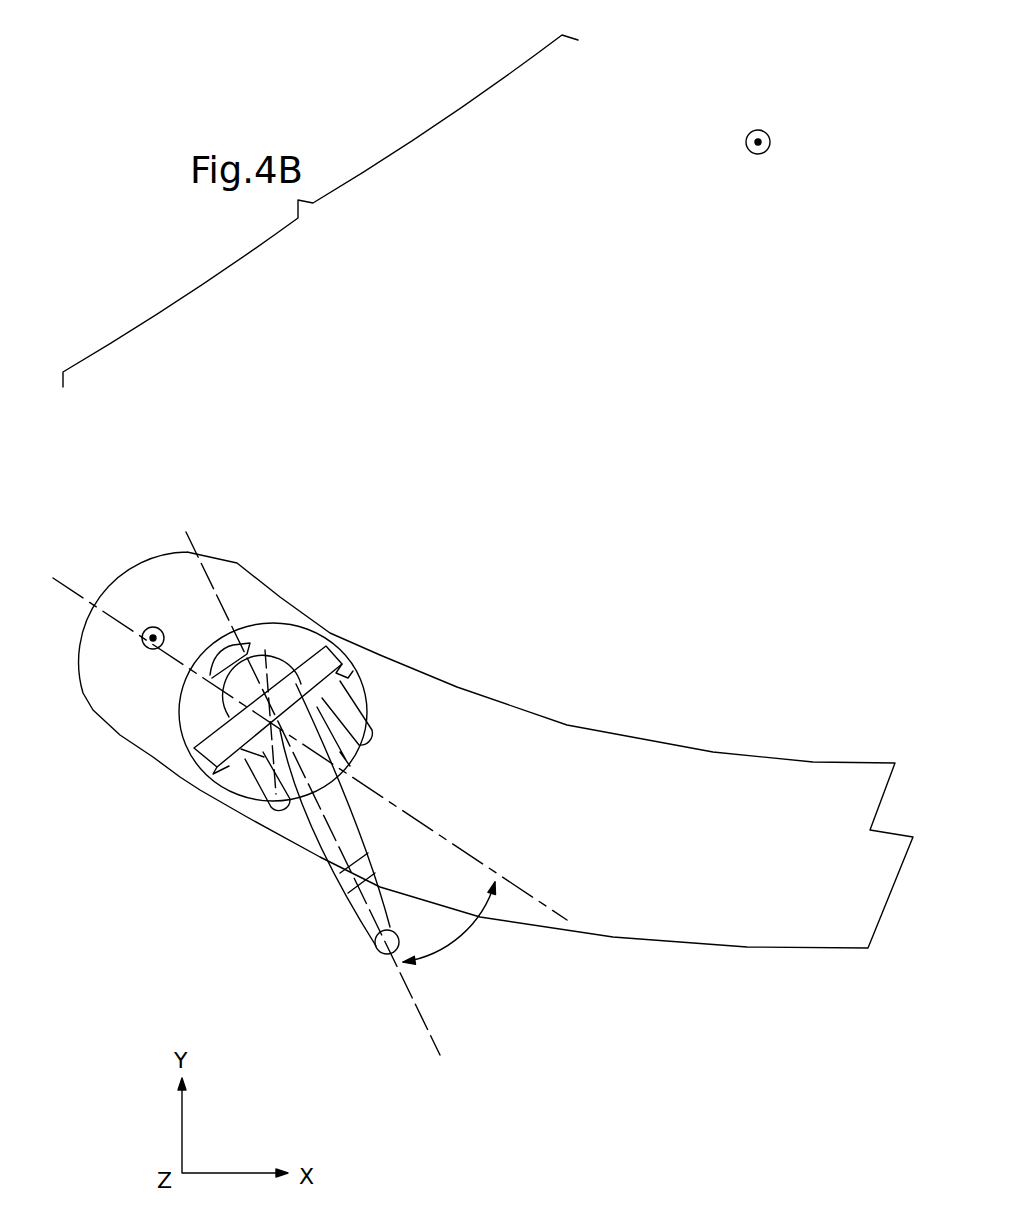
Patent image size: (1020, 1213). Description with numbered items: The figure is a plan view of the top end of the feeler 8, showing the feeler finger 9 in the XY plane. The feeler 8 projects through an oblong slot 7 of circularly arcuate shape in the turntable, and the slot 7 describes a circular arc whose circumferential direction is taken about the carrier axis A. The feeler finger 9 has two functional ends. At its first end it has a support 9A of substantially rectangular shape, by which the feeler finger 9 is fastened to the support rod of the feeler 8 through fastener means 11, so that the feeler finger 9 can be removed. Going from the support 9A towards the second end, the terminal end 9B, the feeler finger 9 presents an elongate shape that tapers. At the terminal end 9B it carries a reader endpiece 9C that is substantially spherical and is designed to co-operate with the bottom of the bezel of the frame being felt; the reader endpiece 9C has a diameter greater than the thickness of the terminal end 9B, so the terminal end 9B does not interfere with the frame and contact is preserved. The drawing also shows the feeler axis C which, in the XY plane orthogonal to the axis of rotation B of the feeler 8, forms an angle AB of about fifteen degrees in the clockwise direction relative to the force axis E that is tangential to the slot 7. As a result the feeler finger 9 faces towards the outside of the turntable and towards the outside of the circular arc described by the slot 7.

The oblong slot 7 is at (567, 725).
The feeler 8 is at (192, 758).
The feeler finger 9 is at (370, 825).
The support 9A is at (340, 663).
The terminal end 9B is at (358, 910).
The reader endpiece 9C is at (388, 955).
The fastener means 11 is at (372, 740).
The carrier axis A is at (762, 130).
The axis of rotation B is at (160, 628).
The feeler axis C is at (428, 1033).
The force axis E is at (64, 585).
The angle AB is at (467, 931).